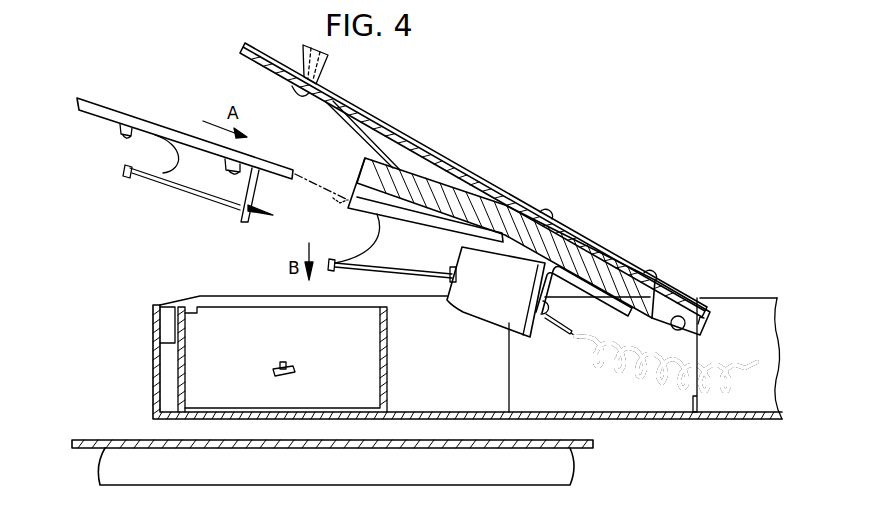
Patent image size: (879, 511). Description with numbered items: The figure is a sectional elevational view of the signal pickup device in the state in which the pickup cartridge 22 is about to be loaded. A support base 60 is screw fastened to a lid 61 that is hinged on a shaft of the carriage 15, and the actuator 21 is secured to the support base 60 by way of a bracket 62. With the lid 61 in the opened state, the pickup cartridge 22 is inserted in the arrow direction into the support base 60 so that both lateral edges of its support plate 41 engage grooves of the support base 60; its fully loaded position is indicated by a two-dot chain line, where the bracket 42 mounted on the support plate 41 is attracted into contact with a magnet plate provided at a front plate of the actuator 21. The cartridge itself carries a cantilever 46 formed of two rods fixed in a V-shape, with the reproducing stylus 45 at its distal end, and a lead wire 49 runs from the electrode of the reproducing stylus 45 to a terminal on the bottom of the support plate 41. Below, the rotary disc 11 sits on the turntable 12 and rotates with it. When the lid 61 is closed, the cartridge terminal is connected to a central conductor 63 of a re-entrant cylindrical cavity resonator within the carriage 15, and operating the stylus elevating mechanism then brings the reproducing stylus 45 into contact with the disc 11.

The rotary disc 11 is at (110, 439).
The turntable 12 is at (565, 464).
The carriage 15 is at (153, 331).
The actuator 21 is at (492, 313).
The pickup cartridge 22 is at (141, 110).
The support plate 41 is at (94, 111).
The bracket 42 is at (257, 186).
The reproducing stylus 45 is at (123, 173).
The cantilever 46 is at (173, 190).
The lead wire 49 is at (153, 157).
The support base 60 is at (580, 250).
The lid 61 is at (473, 173).
The bracket 62 is at (545, 283).
The central conductor 63 is at (273, 363).